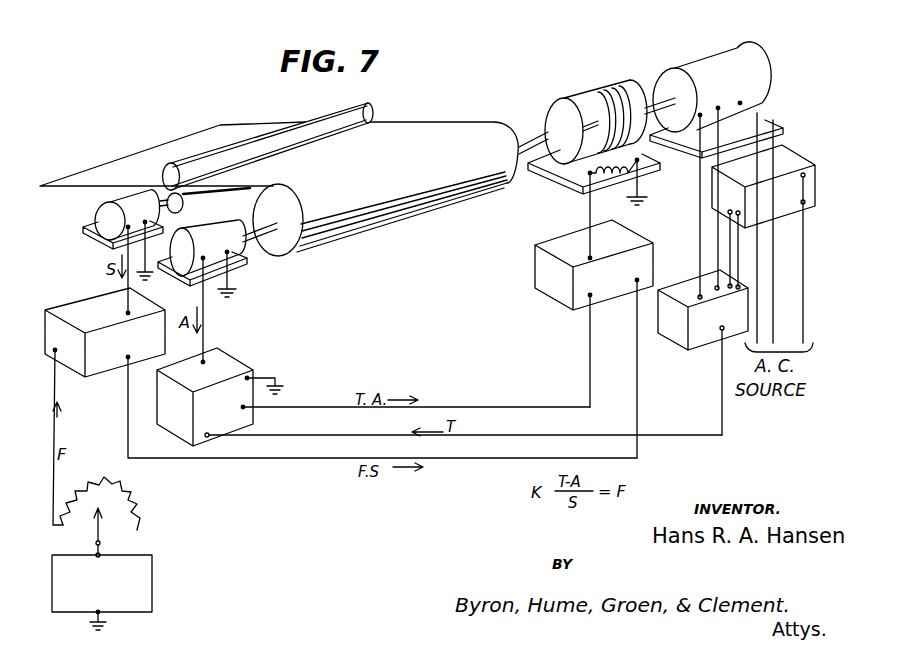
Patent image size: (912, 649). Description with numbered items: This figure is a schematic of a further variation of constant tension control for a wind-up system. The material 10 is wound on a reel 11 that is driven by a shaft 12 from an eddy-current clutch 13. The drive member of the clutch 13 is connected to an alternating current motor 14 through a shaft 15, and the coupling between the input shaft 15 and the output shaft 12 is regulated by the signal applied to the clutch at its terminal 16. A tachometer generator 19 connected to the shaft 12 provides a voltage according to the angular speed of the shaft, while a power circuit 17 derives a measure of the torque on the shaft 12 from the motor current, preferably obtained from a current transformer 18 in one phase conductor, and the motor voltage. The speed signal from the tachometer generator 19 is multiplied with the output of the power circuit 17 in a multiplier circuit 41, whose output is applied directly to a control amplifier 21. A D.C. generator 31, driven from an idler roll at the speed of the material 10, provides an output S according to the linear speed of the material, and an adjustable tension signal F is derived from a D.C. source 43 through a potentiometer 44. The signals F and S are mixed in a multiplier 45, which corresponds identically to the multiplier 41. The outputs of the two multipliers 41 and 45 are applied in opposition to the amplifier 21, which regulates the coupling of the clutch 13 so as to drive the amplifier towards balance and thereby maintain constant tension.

The material 10 is at (380, 134).
The reel 11 is at (452, 190).
The shaft 12 is at (535, 140).
The eddy-current clutch 13 is at (565, 97).
The motor 14 is at (737, 62).
The shaft 15 is at (657, 77).
The terminal 16 is at (590, 213).
The power circuit 17 is at (692, 292).
The current transformer 18 is at (812, 163).
The tachometer generator 19 is at (232, 246).
The control amplifier 21 is at (547, 262).
The D.C. generator 31 is at (107, 213).
The multiplier circuit 41 is at (227, 367).
The D.C. source 43 is at (137, 577).
The potentiometer 44 is at (130, 512).
The multiplier 45 is at (68, 313).